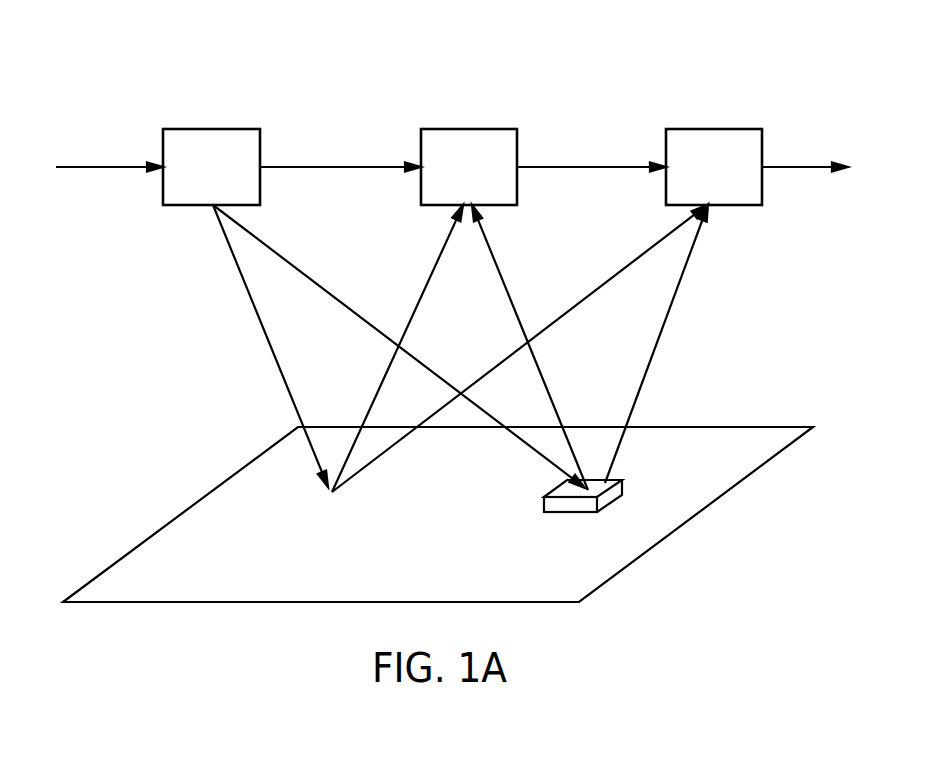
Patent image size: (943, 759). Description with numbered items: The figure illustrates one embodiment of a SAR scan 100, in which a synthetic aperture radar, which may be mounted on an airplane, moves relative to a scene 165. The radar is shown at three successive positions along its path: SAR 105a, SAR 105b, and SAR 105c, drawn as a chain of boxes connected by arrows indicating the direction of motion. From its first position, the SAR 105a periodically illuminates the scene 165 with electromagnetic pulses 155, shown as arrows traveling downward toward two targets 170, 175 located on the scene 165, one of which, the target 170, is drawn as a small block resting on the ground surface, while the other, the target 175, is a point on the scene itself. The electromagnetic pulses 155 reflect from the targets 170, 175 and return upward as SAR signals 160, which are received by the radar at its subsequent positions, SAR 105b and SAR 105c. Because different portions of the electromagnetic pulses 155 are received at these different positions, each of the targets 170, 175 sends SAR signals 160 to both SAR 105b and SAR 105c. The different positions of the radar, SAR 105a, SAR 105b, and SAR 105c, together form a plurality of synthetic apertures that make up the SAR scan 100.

The SAR scan 100 is at (127, 54).
The SAR 105a is at (211, 167).
The SAR 105b is at (469, 167).
The SAR 105c is at (714, 167).
The electromagnetic pulses 155 is at (347, 307).
The SAR signals 160 is at (432, 273).
The scene 165 is at (180, 538).
The target 170 is at (605, 480).
The target 175 is at (335, 491).